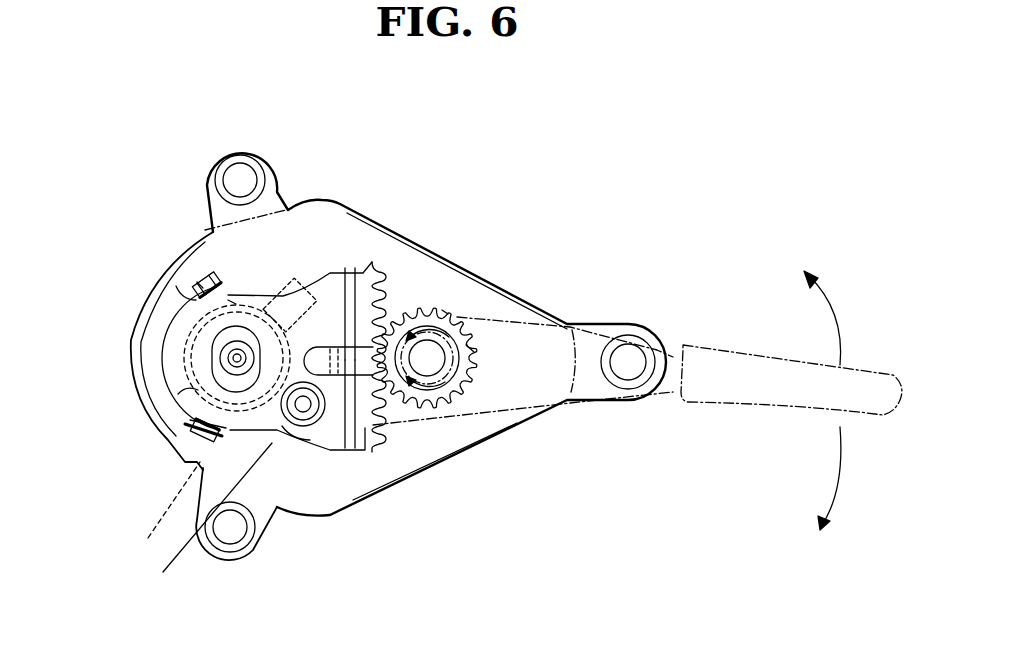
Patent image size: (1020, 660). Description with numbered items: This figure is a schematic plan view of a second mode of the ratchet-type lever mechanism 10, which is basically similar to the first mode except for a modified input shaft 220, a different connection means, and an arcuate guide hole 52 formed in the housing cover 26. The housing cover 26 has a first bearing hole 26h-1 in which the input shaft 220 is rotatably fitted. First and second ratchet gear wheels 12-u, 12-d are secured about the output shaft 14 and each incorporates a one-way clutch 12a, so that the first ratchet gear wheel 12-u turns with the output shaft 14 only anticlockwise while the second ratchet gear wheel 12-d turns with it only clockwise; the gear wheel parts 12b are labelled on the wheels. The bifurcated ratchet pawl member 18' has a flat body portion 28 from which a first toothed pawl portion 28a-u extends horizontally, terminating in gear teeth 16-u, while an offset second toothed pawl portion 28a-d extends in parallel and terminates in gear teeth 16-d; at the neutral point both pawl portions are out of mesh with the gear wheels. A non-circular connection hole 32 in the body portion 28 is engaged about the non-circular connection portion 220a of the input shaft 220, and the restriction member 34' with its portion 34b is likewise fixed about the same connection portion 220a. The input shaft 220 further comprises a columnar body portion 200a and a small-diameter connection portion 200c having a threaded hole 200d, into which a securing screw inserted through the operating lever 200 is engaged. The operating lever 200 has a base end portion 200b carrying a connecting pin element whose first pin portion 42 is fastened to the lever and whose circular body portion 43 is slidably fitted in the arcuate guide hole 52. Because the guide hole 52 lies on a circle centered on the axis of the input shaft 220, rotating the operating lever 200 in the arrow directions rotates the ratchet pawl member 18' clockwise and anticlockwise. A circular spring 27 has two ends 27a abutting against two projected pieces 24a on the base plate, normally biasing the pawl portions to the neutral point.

The ratchet-type lever mechanism 10 is at (632, 226).
The one-way clutch 12a is at (472, 350).
The gear teeth 12b is at (450, 312).
The second ratchet gear wheel 12-d is at (436, 311).
The first ratchet gear wheel 12-u is at (420, 403).
The output shaft 14 is at (538, 309).
The gear teeth 16-d is at (385, 312).
The gear teeth 16-u is at (382, 430).
The operating member 18' is at (457, 305).
The projected pieces 24a is at (198, 290).
The housing cover 26 is at (203, 463).
The first bearing hole 26h-1 is at (237, 350).
The circular spring 27 is at (187, 320).
The ends of the circular spring 27a is at (168, 288).
The body portion 28 is at (233, 340).
The second toothed pawl portion 28a-d is at (340, 285).
The first toothed pawl portion 28a-u is at (352, 450).
The non-circular connection hole 32 is at (195, 278).
The clamp bar 34b is at (190, 428).
The stop 34' is at (158, 511).
The first pin portion 42 is at (338, 382).
The circular body portion 43 is at (310, 440).
The arcuate guide hole 52 is at (300, 426).
The operating lever 200 is at (698, 345).
The columnar body portion 200a is at (563, 406).
The base end portion 200b is at (204, 523).
The small-diameter connection portion 200c is at (225, 358).
The threaded hole 200d is at (165, 328).
The input shaft 220 is at (283, 282).
The non-circular connection portion 220a is at (190, 418).